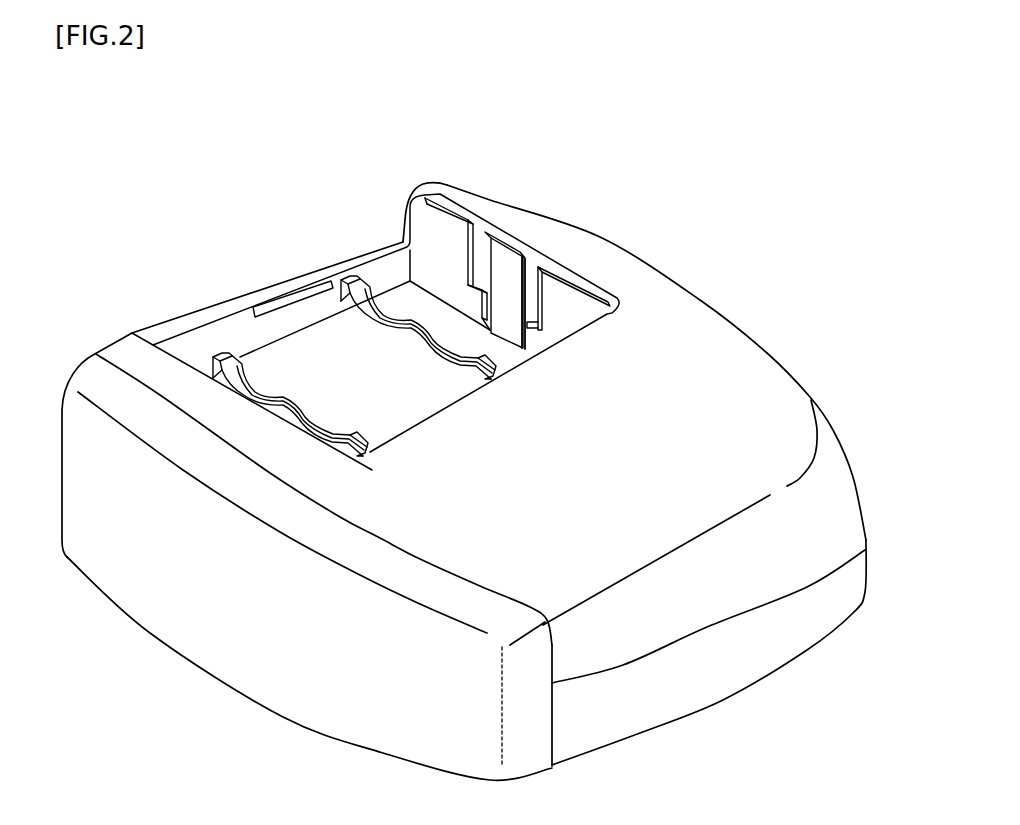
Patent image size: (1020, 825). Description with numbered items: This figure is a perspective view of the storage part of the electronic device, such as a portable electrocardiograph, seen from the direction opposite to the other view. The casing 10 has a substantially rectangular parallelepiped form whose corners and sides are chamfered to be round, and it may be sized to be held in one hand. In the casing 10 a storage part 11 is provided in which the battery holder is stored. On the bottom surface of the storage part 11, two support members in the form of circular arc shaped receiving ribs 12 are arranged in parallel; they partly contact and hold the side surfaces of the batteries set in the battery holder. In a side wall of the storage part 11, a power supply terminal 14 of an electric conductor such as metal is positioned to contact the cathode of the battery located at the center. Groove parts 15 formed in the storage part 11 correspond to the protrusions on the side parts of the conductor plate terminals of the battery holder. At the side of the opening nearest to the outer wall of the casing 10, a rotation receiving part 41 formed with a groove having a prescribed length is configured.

The casing 10 is at (672, 377).
The storage part 11 is at (297, 369).
The receiving ribs 12 is at (240, 370).
The power supply terminal 14 is at (510, 280).
The groove parts 15 is at (485, 275).
The rotation receiving part 41 is at (297, 305).